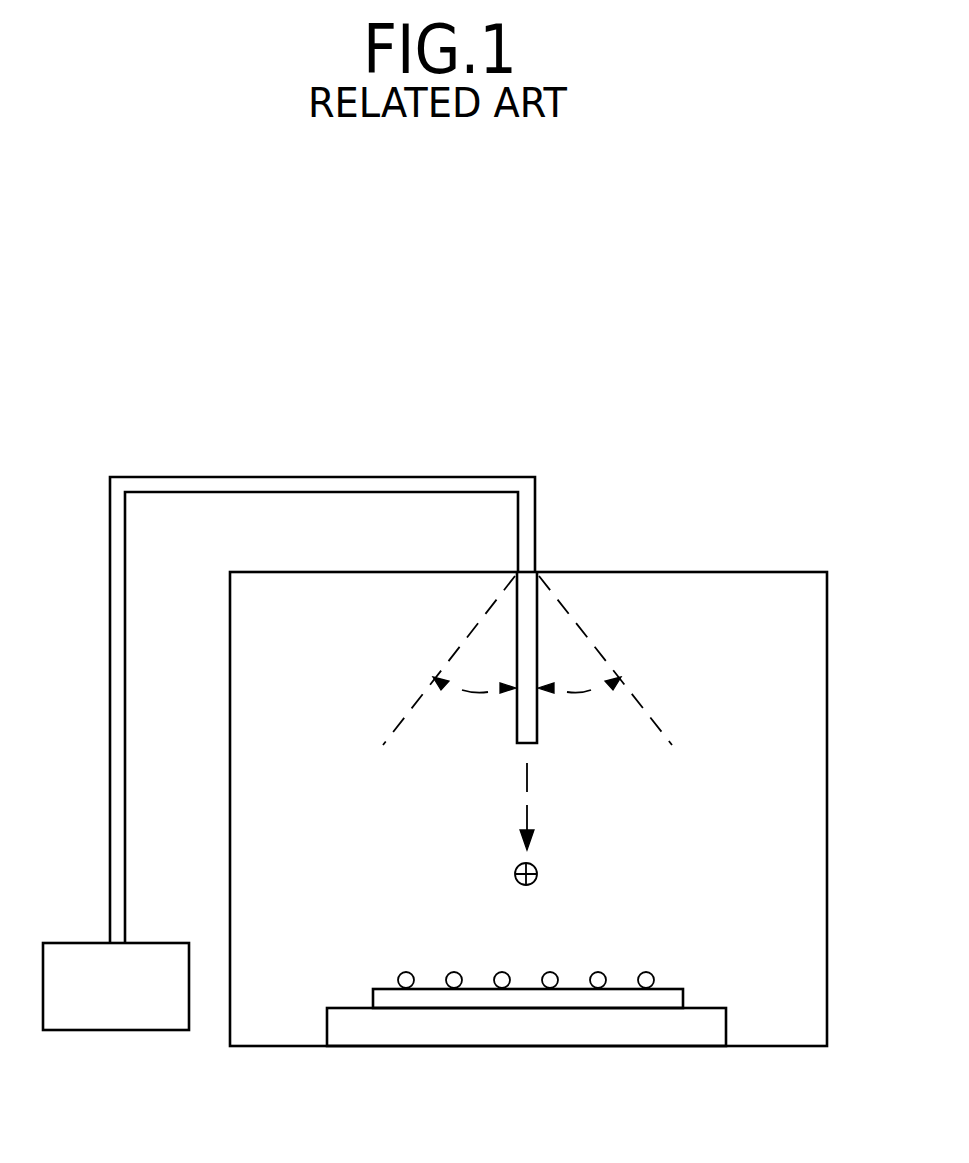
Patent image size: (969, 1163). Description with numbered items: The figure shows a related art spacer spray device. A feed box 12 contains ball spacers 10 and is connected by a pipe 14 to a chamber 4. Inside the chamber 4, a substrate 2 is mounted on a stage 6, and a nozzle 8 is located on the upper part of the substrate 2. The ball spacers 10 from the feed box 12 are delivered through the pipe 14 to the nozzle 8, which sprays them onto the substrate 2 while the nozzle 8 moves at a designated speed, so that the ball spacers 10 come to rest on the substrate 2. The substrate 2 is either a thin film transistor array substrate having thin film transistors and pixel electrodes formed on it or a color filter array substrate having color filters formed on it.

The substrate 2 is at (683, 988).
The chamber 4 is at (828, 871).
The stage 6 is at (727, 1024).
The nozzle 8 is at (538, 735).
The ball spacers 10 is at (538, 874).
The feed box 12 is at (117, 1031).
The pipe 14 is at (126, 750).